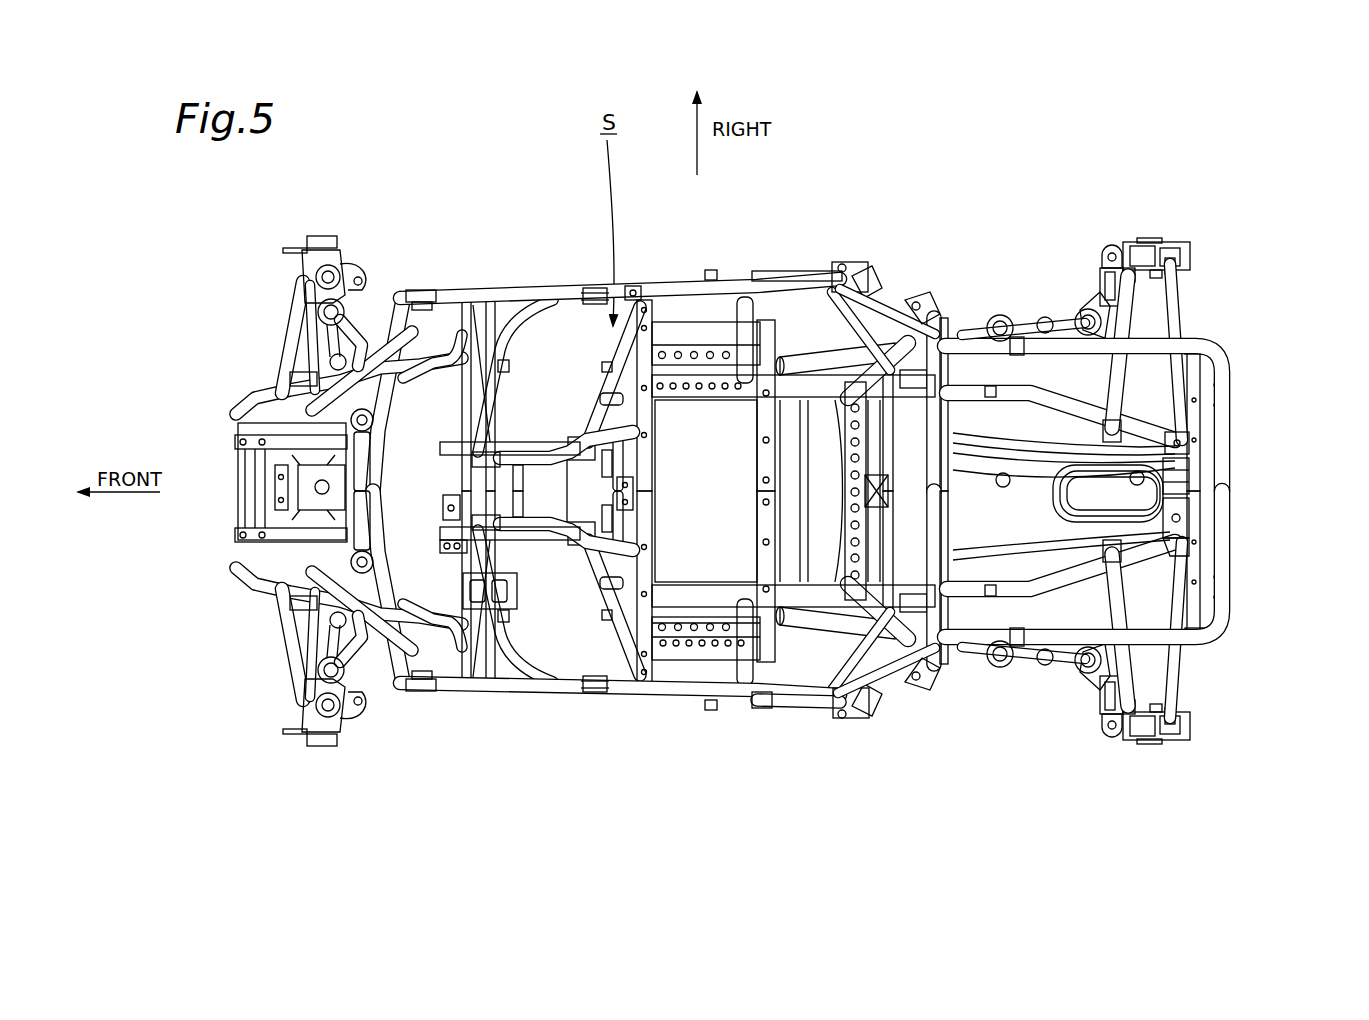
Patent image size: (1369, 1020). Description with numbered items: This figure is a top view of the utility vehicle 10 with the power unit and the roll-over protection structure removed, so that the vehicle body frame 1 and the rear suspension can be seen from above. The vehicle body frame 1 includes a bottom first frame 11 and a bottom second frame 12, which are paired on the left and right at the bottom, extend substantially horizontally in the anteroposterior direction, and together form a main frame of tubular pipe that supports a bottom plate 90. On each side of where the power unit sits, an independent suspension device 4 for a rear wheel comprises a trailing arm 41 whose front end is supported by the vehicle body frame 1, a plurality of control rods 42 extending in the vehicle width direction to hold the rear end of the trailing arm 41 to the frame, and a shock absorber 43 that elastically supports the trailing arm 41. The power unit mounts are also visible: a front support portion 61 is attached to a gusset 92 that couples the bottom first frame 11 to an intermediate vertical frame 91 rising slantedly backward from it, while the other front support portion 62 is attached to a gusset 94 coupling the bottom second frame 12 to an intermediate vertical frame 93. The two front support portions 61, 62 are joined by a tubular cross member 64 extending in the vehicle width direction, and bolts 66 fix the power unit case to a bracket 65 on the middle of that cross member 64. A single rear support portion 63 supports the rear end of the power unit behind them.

The vehicle body frame 1 is at (510, 210).
The suspension device 4 is at (1048, 288).
The utility vehicle 10 is at (1128, 178).
The bottom first frame 11 is at (817, 590).
The bottom second frame 12 is at (823, 383).
The trailing arm 41 is at (916, 290).
The control rod 42 is at (1128, 302).
The shock absorber 43 is at (1001, 300).
The front support portion 61 is at (945, 608).
The front support portion 62 is at (945, 378).
The rear support portion 63 is at (1182, 485).
The cross member 64 is at (1182, 513).
The bracket 65 is at (1187, 445).
The bolt 66 is at (1150, 430).
The bottom plate 90 is at (725, 547).
The intermediate vertical frame 91 is at (867, 605).
The gusset 92 is at (937, 669).
The intermediate vertical frame 93 is at (836, 285).
The gusset 94 is at (880, 305).